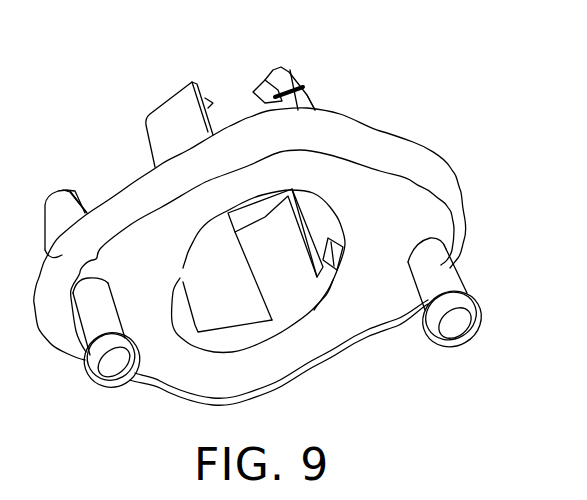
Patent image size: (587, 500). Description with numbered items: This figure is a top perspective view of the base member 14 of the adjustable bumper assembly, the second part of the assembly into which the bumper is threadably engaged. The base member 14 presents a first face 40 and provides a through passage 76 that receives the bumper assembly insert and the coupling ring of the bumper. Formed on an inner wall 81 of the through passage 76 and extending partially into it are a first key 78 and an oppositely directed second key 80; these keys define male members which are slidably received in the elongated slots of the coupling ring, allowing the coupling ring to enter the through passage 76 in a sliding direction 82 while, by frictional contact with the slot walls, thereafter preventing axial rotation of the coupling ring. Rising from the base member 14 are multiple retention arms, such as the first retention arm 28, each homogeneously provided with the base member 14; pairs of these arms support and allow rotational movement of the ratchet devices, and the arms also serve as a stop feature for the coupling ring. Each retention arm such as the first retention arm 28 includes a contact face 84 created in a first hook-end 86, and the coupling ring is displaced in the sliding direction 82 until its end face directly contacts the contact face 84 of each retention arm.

The base member 14 is at (427, 212).
The first retention arm 28 is at (312, 99).
The first face 40 is at (158, 375).
The through passage 76 is at (331, 203).
The first key 78 is at (183, 277).
The second key 80 is at (320, 283).
The inner wall 81 is at (252, 340).
The sliding direction 82 is at (160, 10).
The contact face 84 is at (313, 90).
The first hook-end 86 is at (267, 86).